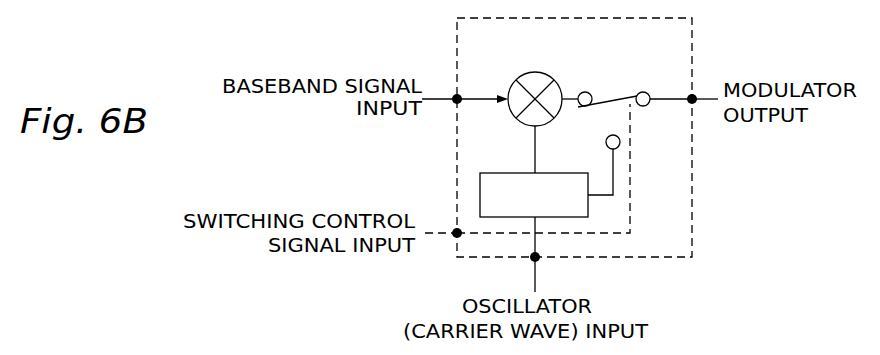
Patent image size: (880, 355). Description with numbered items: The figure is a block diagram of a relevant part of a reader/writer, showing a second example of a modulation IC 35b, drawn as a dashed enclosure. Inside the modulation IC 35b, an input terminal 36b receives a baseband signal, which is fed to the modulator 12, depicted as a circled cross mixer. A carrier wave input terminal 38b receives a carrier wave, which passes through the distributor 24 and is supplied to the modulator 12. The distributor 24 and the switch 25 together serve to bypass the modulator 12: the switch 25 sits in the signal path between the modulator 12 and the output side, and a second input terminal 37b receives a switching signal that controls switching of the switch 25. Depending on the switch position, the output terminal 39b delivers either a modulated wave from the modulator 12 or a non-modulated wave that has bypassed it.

The modulator 12 is at (518, 78).
The distributor 24 is at (505, 171).
The switch 25 is at (620, 102).
The modulation IC 35b is at (692, 200).
The input terminal 36b is at (457, 93).
The input terminal 37b is at (455, 230).
The carrier wave input terminal 38b is at (537, 259).
The output terminal 39b is at (693, 95).